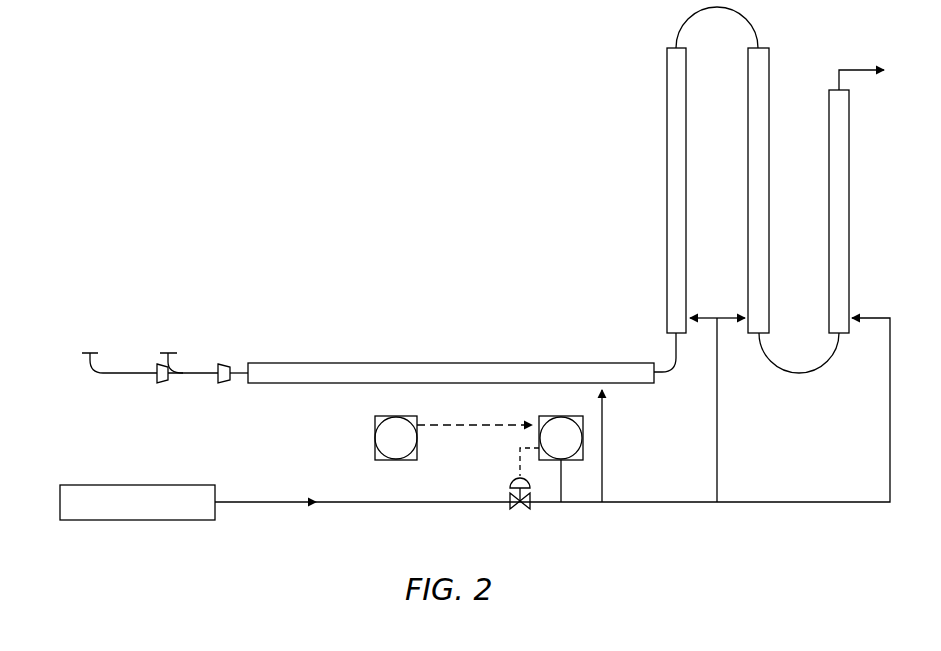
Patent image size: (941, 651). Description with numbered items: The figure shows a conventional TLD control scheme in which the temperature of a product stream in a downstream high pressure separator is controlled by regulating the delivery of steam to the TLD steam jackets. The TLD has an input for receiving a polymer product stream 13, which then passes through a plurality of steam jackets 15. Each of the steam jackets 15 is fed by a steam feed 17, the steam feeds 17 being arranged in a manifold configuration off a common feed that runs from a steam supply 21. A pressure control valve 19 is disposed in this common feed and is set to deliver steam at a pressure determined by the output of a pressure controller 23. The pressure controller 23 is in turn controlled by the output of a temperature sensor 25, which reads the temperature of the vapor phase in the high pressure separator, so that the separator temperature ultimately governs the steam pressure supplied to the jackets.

The input for receiving a polymer product stream 13 is at (224, 383).
The steam jackets 15 is at (686, 133).
The steam feed 17 is at (738, 316).
The pressure control valve 19 is at (510, 490).
The steam supply 21 is at (188, 485).
The pressure controller 23 is at (561, 416).
The temperature sensor 25 is at (375, 438).